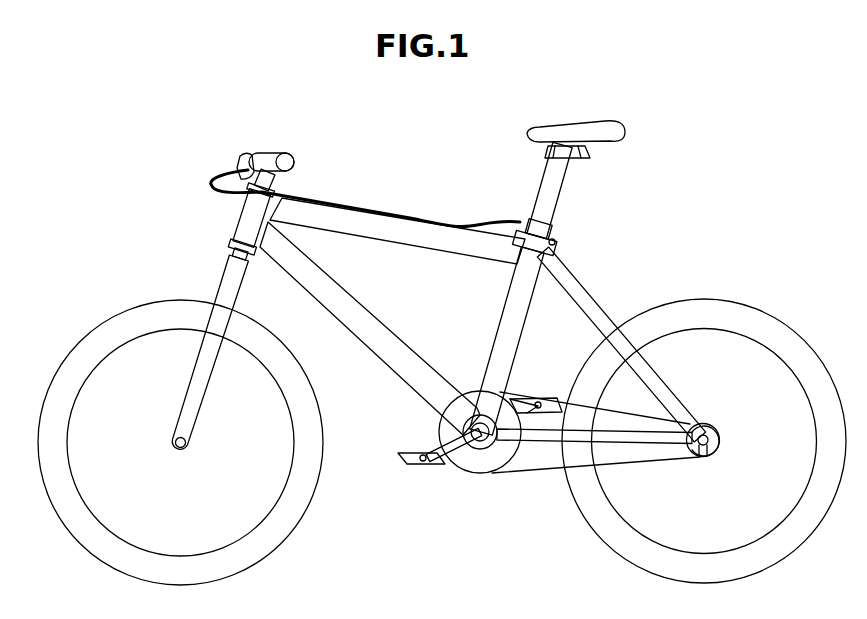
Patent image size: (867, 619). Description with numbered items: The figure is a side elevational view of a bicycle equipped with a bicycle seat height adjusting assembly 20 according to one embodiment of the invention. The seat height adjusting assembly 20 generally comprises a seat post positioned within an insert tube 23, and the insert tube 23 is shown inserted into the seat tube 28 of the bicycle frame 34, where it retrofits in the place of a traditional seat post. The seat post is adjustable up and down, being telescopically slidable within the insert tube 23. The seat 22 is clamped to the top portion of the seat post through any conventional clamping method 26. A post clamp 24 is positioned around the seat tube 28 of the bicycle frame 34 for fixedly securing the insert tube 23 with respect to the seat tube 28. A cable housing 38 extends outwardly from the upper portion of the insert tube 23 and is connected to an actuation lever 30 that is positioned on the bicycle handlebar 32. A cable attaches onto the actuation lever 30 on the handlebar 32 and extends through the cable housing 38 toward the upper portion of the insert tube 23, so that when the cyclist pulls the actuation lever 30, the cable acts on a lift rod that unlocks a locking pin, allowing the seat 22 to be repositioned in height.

The bicycle seat height adjusting assembly 20 is at (592, 198).
The seat 22 is at (592, 133).
The insert tube 23 is at (548, 233).
The post clamp 24 is at (548, 252).
The clamping method 26 is at (578, 158).
The seat tube 28 is at (527, 288).
The actuation lever 30 is at (252, 158).
The handlebar 32 is at (240, 154).
The bicycle frame 34 is at (196, 208).
The cable housing 38 is at (340, 202).